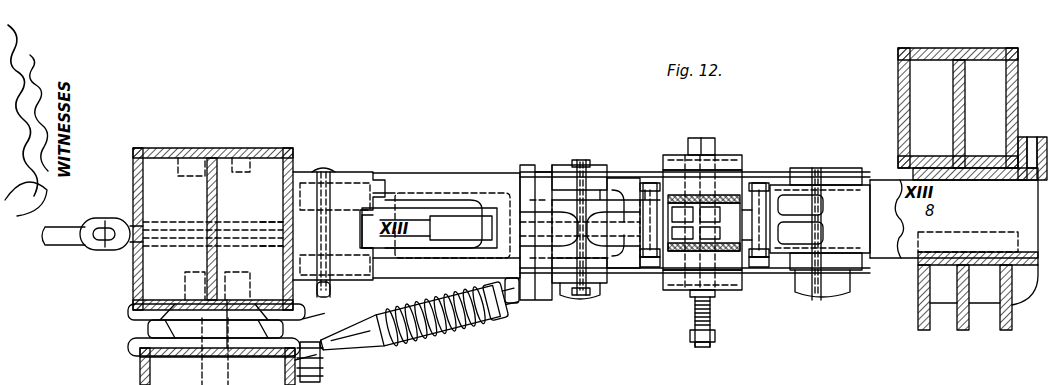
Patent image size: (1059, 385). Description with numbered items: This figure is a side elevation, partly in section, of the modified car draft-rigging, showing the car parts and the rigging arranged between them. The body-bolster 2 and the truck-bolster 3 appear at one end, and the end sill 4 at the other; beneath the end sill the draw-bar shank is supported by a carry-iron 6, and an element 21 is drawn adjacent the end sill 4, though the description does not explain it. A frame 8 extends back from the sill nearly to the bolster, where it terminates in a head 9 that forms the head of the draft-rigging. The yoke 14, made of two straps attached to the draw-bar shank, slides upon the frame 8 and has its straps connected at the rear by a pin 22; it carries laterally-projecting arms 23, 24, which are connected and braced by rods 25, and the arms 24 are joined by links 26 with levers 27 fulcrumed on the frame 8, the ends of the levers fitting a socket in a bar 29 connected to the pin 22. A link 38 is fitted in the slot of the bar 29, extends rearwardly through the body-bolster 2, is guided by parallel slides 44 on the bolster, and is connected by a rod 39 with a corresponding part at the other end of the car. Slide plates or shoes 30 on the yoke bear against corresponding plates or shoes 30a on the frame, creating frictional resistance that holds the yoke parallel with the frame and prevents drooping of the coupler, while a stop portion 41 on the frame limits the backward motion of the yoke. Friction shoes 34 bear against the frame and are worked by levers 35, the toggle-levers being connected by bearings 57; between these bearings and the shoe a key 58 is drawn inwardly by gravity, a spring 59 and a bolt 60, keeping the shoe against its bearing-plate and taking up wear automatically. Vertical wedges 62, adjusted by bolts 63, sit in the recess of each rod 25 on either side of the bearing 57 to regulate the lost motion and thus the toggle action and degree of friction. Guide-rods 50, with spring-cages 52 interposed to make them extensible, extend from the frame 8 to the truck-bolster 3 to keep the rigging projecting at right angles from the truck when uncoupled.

The body-bolster 2 is at (213, 229).
The truck-bolster 3 is at (217, 366).
The end sill 4 is at (958, 108).
The carry-iron 6 is at (978, 291).
The frame 8 is at (428, 196).
The head 9 is at (320, 172).
The yoke 14 is at (618, 178).
The floor plate 21 is at (968, 160).
The pin 22 is at (560, 170).
The laterally-projecting arms 23 is at (830, 178).
The laterally-projecting arms 24 is at (583, 184).
The rods 25 is at (895, 207).
The links 26 is at (560, 226).
The levers 27 is at (429, 228).
The bar 29 is at (278, 268).
The slide plates or shoes 30 is at (570, 263).
The plates or shoes 30a is at (621, 190).
The friction plates or shoes 34 is at (765, 277).
The levers 35 is at (742, 166).
The link 38 is at (218, 275).
The rod 39 is at (63, 231).
The stop portion 41 is at (522, 176).
The parallel slides 44 is at (213, 214).
The guide-rods 50 is at (403, 318).
The spring-cages 52 is at (428, 313).
The bearings 57 is at (688, 200).
The key 58 is at (708, 150).
The spring 59 is at (716, 322).
The bolt 60 is at (700, 294).
The vertical wedges 62 is at (648, 270).
The bolts 63 is at (704, 214).